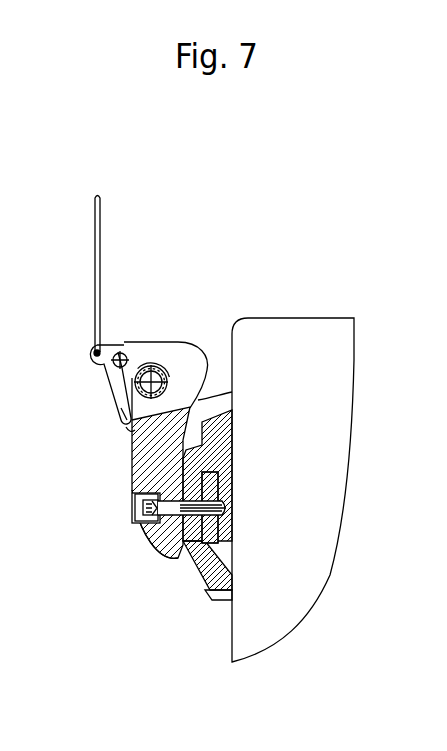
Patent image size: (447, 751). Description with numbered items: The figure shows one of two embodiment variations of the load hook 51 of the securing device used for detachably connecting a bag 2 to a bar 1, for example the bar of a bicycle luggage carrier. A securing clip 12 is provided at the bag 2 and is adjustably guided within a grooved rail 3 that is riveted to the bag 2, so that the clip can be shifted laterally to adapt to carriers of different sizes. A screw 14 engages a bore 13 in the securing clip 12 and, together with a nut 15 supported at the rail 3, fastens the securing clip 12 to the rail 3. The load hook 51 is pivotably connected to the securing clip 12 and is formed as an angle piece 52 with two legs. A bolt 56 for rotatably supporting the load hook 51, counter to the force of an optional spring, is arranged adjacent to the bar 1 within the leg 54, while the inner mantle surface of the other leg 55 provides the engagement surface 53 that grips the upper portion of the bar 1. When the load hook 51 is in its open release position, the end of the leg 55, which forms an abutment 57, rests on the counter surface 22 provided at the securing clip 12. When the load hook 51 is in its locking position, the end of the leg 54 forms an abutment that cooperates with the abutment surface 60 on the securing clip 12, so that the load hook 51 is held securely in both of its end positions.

The bag 2 is at (307, 317).
The bar 1 is at (118, 406).
The rail 3 is at (207, 580).
The securing clip 12 is at (133, 476).
The bore 13 is at (147, 538).
The screw 14 is at (143, 503).
The nut 15 is at (222, 517).
The counter surface 22 is at (96, 220).
The load hook 51 is at (158, 342).
The angle piece 52 is at (113, 393).
The engagement surface 53 is at (90, 348).
The leg 54 is at (125, 420).
The leg 55 is at (178, 343).
The bolt 56 is at (123, 343).
The abutment 57 is at (186, 378).
The abutment surface 60 is at (128, 432).